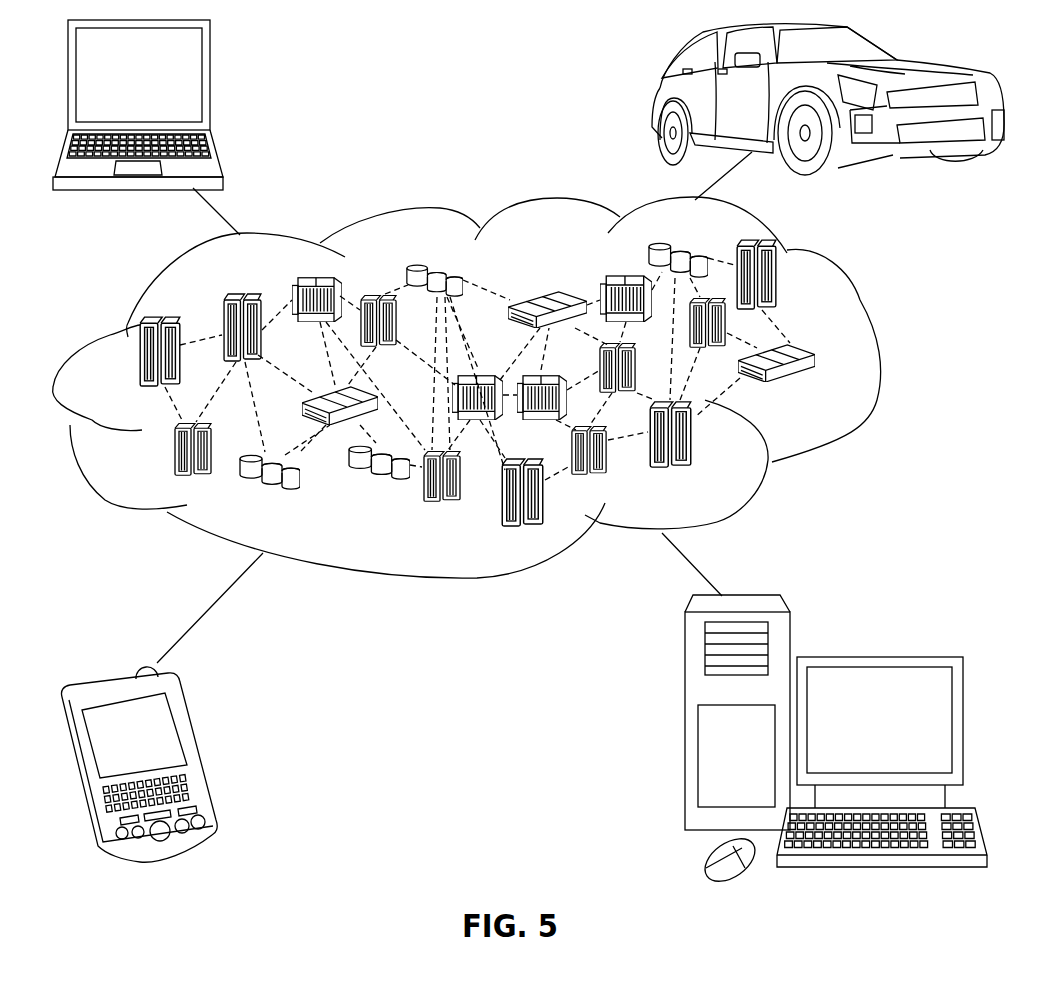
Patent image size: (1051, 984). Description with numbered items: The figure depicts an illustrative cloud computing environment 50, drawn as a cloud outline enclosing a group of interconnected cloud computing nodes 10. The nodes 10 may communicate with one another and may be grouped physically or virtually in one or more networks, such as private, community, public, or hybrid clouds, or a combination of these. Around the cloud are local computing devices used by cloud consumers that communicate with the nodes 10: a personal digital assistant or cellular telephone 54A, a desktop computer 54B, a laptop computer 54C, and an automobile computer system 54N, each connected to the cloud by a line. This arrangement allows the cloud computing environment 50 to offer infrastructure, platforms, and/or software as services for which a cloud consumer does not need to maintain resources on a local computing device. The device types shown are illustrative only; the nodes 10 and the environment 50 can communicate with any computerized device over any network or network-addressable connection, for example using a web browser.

The cloud computing nodes 10 is at (816, 391).
The cloud computing environment 50 is at (874, 362).
The personal digital assistant or cellular telephone 54A is at (198, 750).
The desktop computer 54B is at (876, 654).
The laptop computer 54C is at (210, 82).
The automobile computer system 54N is at (653, 98).